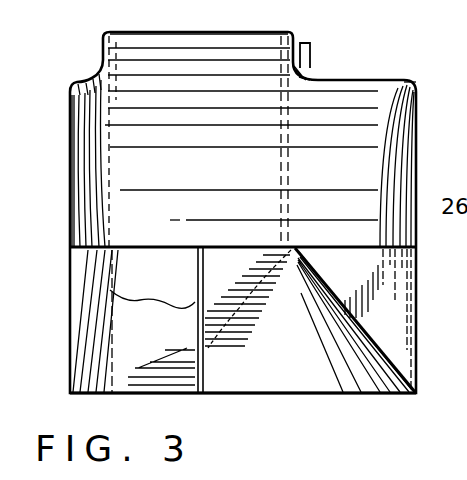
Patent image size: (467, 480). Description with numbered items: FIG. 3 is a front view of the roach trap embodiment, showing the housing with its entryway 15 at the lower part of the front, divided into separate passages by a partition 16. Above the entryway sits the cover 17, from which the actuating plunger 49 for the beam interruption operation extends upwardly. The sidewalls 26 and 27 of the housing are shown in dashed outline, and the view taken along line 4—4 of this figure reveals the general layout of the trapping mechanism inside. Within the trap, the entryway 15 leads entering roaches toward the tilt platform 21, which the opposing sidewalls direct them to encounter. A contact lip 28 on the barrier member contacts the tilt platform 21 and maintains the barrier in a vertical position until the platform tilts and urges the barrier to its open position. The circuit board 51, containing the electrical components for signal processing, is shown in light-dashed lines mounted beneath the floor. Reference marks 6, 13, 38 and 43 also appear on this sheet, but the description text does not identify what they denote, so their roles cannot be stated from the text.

The section line 4— 4 is at (96, 90).
The section line 6- 6 is at (212, 13).
The container 13 is at (286, 471).
The entryway 15 is at (303, 365).
The partition 16 is at (110, 288).
The cover 17 is at (260, 47).
The tilt platform 21 is at (449, 275).
The sidewall 26 is at (110, 62).
The sidewall 27 is at (403, 73).
The contact lip 28 is at (434, 5).
The partition 38 is at (466, 248).
The corner 43 is at (461, 453).
The actuating plunger 49 is at (312, 55).
The circuit board 51 is at (463, 310).